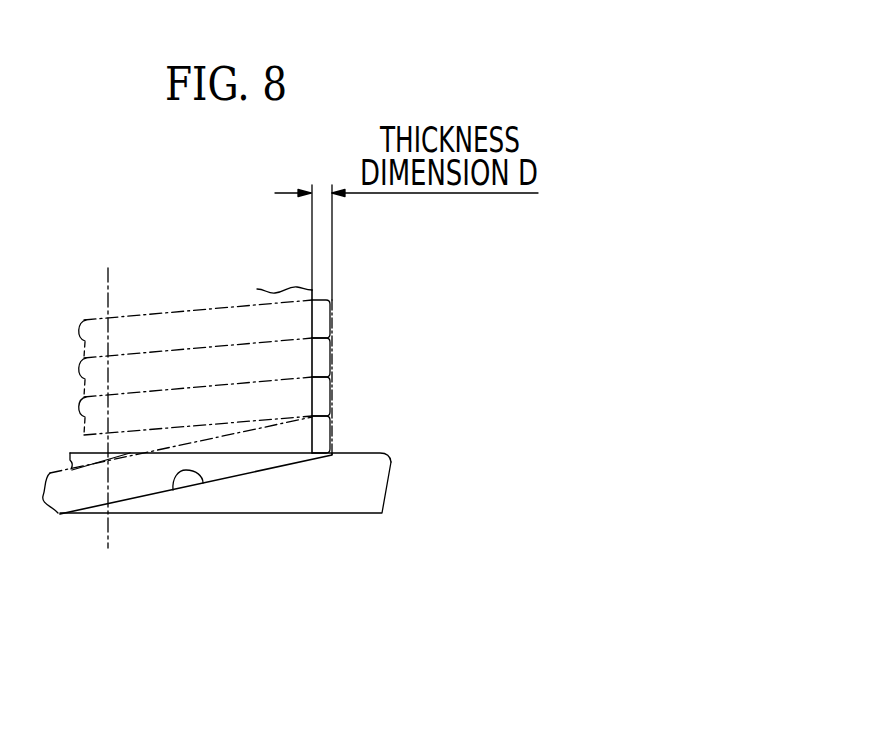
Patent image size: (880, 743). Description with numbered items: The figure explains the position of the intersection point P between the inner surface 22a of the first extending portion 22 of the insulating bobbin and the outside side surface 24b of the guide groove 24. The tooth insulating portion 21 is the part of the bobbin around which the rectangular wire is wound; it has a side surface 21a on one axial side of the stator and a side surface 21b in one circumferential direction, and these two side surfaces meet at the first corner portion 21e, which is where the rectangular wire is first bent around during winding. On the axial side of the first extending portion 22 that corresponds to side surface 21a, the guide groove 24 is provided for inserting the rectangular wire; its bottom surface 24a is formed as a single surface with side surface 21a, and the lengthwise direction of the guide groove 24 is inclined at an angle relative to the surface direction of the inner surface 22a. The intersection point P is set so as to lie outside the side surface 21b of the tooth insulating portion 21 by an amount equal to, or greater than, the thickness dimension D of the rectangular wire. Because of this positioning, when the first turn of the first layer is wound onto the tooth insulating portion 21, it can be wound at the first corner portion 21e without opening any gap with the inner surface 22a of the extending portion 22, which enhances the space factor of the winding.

The tooth insulating portion 21 is at (313, 353).
The one side surface 21a is at (202, 365).
The one side surface 21b is at (313, 391).
The first corner portion 21e is at (313, 432).
The first extending portion 22 is at (297, 513).
The inner surface 22a is at (357, 453).
The guide groove 24 is at (247, 473).
The bottom surface 24a is at (128, 480).
The outside side surface 24b is at (173, 478).
The intersection point P is at (334, 457).